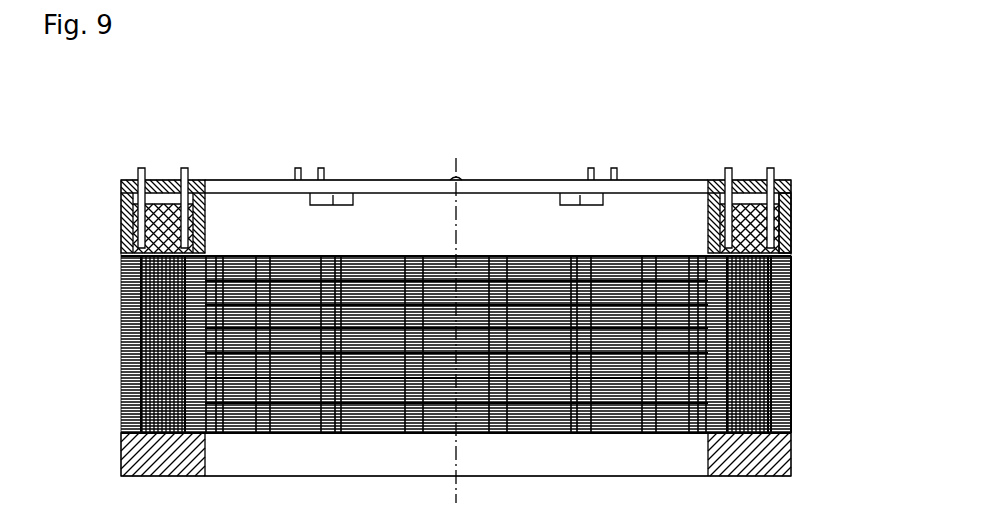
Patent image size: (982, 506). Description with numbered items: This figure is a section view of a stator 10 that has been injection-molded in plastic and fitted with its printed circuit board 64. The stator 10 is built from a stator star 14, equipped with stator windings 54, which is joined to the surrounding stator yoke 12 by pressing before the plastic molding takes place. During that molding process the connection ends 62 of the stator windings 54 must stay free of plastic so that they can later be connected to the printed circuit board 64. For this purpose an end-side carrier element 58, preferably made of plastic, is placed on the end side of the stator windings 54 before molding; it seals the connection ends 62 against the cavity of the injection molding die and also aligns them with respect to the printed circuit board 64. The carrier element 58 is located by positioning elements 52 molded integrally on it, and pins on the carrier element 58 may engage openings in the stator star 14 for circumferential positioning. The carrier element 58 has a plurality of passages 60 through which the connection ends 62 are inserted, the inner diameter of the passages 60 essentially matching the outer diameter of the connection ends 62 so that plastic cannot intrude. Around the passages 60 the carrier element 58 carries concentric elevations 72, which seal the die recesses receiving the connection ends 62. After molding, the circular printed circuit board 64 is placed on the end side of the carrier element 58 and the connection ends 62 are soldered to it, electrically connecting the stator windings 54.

The stator 10 is at (812, 134).
The stator yoke 12 is at (780, 320).
The stator star 14 is at (448, 312).
The positioning elements 52 is at (113, 212).
The stator windings 54 is at (155, 328).
The carrier element 58 is at (780, 238).
The passages 60 is at (783, 213).
The connection ends 62 is at (762, 165).
The printed circuit board 64 is at (525, 182).
The concentric elevations 72 is at (118, 192).